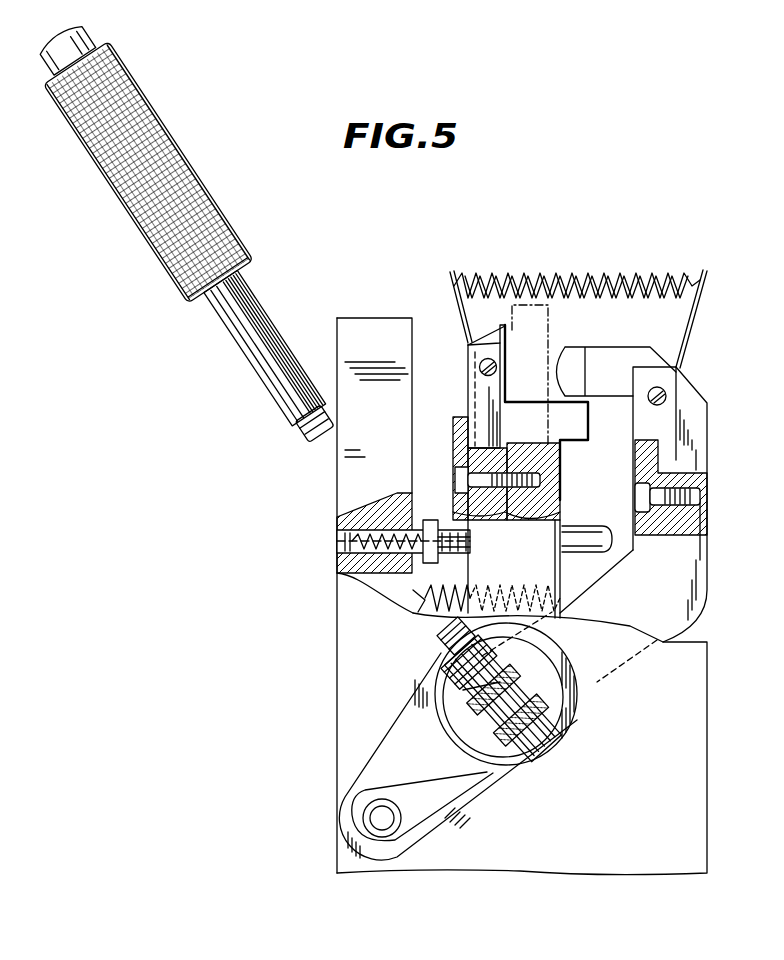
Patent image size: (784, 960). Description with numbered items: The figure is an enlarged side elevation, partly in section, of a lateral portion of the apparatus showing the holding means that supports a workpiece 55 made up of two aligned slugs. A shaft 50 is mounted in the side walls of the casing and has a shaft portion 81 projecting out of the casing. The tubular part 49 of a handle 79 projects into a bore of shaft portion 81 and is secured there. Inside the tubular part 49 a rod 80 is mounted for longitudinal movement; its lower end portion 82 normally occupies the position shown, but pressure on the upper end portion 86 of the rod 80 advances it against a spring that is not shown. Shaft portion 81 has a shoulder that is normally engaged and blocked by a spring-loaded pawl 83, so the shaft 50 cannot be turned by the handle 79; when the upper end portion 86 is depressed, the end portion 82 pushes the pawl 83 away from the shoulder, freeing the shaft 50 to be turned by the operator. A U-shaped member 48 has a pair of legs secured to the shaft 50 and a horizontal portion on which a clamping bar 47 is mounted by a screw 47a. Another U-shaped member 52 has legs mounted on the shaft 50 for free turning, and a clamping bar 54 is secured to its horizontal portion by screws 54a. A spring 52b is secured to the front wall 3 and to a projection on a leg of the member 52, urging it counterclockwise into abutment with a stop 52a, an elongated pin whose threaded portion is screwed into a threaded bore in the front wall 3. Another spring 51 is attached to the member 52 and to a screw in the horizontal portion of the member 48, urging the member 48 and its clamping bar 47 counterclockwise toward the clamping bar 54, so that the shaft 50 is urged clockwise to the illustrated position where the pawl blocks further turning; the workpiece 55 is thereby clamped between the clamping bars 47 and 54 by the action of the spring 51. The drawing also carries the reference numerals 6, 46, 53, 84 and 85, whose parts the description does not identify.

The front wall 3 is at (372, 330).
The base 6 is at (345, 743).
The clamping assembly 46 is at (326, 616).
The clamping bar 47 is at (485, 336).
The screw 47a is at (465, 477).
The U-shaped member 48 is at (556, 568).
The tubular part 49 is at (244, 350).
The shaft 50 is at (588, 691).
The spring 51 is at (562, 278).
The U-shaped member 52 is at (702, 559).
The stop 52a is at (581, 526).
The spring 52b is at (466, 590).
The stop block 53 is at (706, 490).
The clamping bar 54 is at (628, 352).
The screws 54a is at (636, 492).
The workpiece 55 is at (550, 327).
The handle 79 is at (130, 232).
The rod 80 is at (307, 448).
The shaft portion 81 is at (463, 690).
The end portion 82 is at (558, 666).
The spring-loaded pawl 83 is at (378, 852).
The pivot bore 84 is at (394, 820).
The lever arm 85 is at (523, 773).
The upper end portion 86 is at (88, 34).